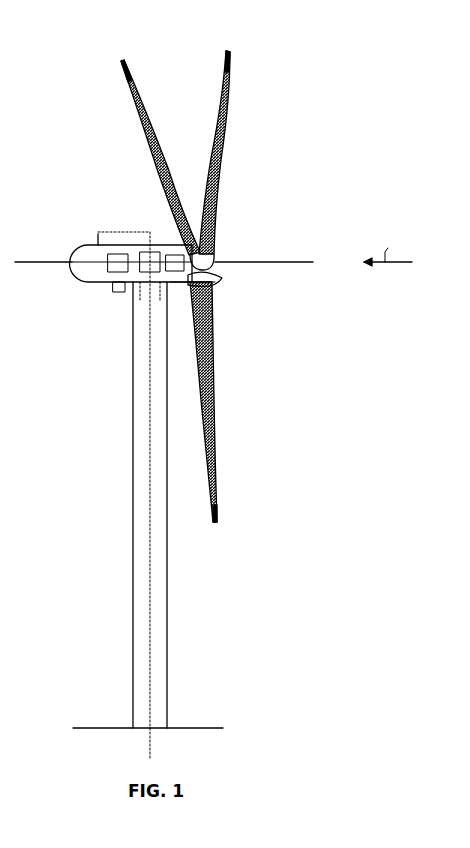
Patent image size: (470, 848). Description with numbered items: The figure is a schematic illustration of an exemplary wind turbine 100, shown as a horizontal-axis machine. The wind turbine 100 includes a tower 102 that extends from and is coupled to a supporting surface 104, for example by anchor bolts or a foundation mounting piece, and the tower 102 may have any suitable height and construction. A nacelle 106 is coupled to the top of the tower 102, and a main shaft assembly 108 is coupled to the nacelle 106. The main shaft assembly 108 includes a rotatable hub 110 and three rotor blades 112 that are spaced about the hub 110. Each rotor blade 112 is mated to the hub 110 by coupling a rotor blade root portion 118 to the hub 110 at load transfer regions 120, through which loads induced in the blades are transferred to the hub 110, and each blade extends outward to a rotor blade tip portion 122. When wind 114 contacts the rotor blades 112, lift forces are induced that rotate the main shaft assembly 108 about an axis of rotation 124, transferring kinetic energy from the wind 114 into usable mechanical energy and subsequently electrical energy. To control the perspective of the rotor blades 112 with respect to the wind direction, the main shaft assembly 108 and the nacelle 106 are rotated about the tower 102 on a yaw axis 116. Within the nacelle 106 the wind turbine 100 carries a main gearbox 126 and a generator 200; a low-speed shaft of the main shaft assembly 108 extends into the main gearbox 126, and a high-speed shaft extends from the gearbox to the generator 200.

The wind turbine 100 is at (336, 51).
The tower 102 is at (133, 660).
The supporting surface 104 is at (92, 728).
The nacelle 106 is at (82, 281).
The main shaft assembly 108 is at (222, 284).
The rotatable hub 110 is at (250, 262).
The rotor blades 112 is at (150, 138).
The wind 114 is at (407, 261).
The yaw axis 116 is at (99, 233).
The rotor blade root portion 118 is at (215, 338).
The load transfer regions 120 is at (213, 248).
The rotor blade tip portion 122 is at (127, 82).
The axis of rotation 124 is at (283, 264).
The main gearbox 126 is at (150, 292).
The generator 200 is at (117, 292).